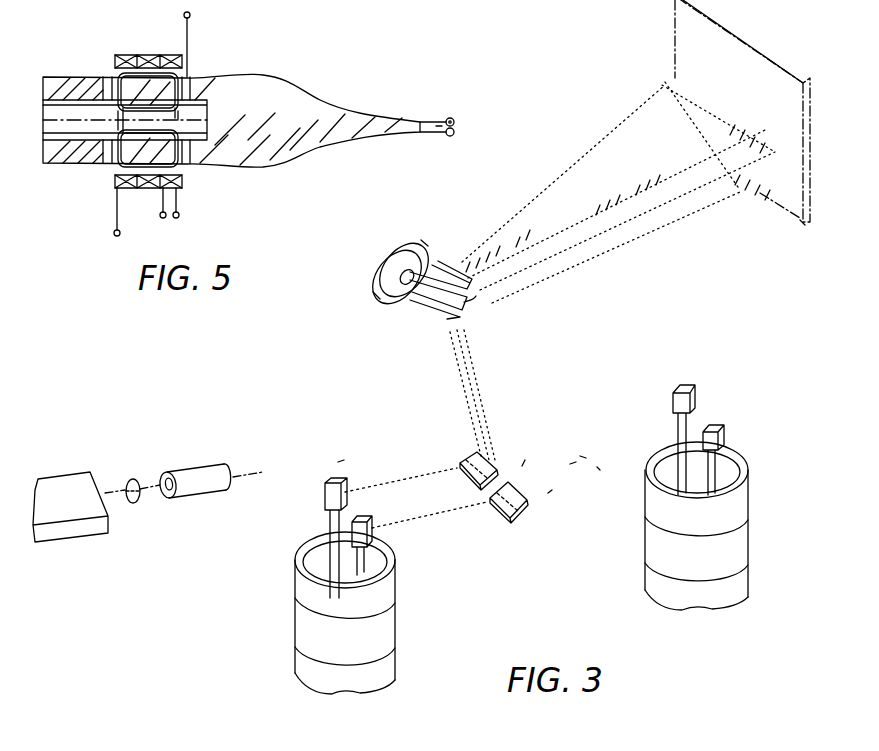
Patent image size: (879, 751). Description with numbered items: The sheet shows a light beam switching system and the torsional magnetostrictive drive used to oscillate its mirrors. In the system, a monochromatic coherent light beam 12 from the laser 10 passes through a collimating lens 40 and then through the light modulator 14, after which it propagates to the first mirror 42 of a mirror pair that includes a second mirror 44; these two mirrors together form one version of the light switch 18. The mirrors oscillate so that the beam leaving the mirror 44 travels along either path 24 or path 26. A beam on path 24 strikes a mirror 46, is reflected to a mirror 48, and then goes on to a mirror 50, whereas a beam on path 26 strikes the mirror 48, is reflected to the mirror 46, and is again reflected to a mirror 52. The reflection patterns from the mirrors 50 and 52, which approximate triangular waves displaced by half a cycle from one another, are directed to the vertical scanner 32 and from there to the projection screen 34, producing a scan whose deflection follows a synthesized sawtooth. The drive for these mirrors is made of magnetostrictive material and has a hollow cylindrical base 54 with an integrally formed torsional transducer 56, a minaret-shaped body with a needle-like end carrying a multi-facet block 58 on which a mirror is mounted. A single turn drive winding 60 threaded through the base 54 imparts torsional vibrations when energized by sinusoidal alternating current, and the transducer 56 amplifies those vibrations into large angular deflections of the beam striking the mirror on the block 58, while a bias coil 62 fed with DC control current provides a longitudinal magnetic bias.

In FIG. 3, the laser 10 is at (82, 535).
In FIG. 3, the light beam 12 is at (106, 484).
In FIG. 3, the light modulator 14 is at (200, 490).
In FIG. 3, the light switch 18 is at (760, 506).
In FIG. 3, the path 24 is at (553, 490).
In FIG. 3, the path 26 is at (531, 463).
In FIG. 3, the vertical scanner 32 is at (569, 271).
In FIG. 3, the projection screen 34 is at (742, 123).
In FIG. 3, the collimating lens 40 is at (136, 500).
In FIG. 3, the first mirror 42 is at (702, 431).
In FIG. 3, the second mirror 44 is at (732, 452).
In FIG. 3, the mirror 46 is at (362, 515).
In FIG. 3, the second mirror 48 is at (325, 487).
In FIG. 3, the mirror 50 is at (458, 468).
In FIG. 3, the mirror 52 is at (522, 510).
In FIG. 5, the hollow cylindrical base 54 is at (103, 165).
In FIG. 5, the torsional transducer 56 is at (357, 136).
In FIG. 5, the multi-facet block 58 is at (449, 118).
In FIG. 5, the single turn drive winding 60 is at (176, 55).
In FIG. 5, the bias coil 62 is at (155, 190).